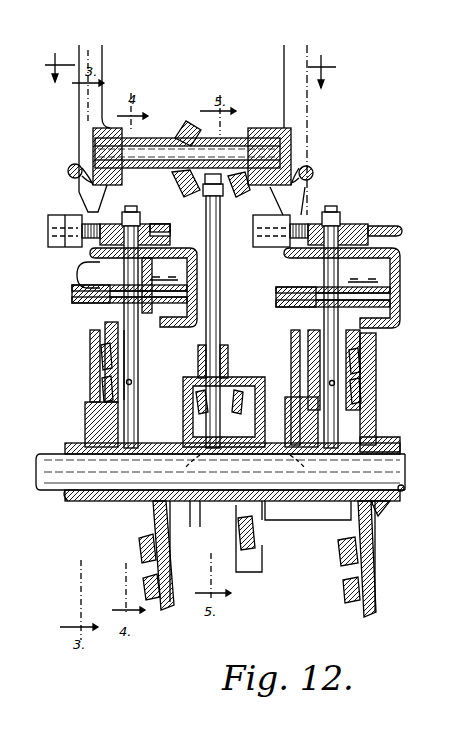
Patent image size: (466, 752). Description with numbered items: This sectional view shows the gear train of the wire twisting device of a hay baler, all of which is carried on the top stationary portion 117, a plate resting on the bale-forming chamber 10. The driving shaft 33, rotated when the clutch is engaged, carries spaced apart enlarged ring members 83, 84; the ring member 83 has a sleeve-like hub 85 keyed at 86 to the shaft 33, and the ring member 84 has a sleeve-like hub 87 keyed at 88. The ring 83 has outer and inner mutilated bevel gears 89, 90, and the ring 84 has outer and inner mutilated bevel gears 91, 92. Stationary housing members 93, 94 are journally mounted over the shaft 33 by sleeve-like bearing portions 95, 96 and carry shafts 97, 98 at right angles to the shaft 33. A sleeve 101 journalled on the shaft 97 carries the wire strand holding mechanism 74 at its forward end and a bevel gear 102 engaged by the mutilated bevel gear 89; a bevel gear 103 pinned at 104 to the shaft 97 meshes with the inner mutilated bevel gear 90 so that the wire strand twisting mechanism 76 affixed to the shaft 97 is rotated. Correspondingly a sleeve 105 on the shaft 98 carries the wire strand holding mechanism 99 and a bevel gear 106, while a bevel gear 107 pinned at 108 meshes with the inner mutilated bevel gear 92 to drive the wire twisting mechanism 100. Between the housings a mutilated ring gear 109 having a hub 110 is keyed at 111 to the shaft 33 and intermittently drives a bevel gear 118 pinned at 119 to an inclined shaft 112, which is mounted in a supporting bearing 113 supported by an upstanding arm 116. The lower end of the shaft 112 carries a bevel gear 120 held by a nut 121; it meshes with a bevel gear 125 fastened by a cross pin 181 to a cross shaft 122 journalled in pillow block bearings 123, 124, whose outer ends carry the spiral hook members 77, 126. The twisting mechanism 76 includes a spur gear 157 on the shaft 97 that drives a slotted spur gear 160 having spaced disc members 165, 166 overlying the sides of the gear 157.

The bale-forming chamber 10 is at (188, 69).
The shaft 33 is at (405, 488).
The wire strand holding mechanism 74 is at (72, 300).
The wire strand twisting mechanism 76 is at (60, 250).
The spiral hook member 77 is at (67, 166).
The ring member 83 is at (172, 568).
The ring member 84 is at (378, 571).
The sleeve-like hub 85 is at (193, 501).
The key 86 is at (200, 463).
The sleeve-like hub 87 is at (386, 506).
The key 88 is at (398, 453).
The outer mutilated bevel gear 89 is at (145, 588).
The inner mutilated bevel gear 90 is at (140, 548).
The outer mutilated bevel gear 91 is at (345, 592).
The inner mutilated bevel gear 92 is at (340, 554).
The housing member 93 is at (98, 431).
The housing member 94 is at (298, 430).
The sleeve-like bearing portion 95 is at (75, 502).
The sleeve-like bearing portion 96 is at (305, 502).
The shaft 97 is at (126, 331).
The shaft 98 is at (333, 422).
The wire strand holding mechanism 99 is at (380, 313).
The wire twisting mechanism 100 is at (357, 223).
The sleeve 101 is at (104, 323).
The bevel gear 102 is at (104, 363).
The bevel gear 103 is at (104, 396).
The pin 104 is at (126, 382).
The sleeve 105 is at (376, 343).
The bevel gear 106 is at (300, 352).
The bevel gear 107 is at (362, 395).
The pin 108 is at (335, 383).
The mutilated ring gear 109 is at (263, 535).
The hub 110 is at (247, 538).
The key 111 is at (237, 414).
The shaft 112 is at (190, 297).
The supporting bearing 113 is at (236, 344).
The upstanding arm 116 is at (197, 268).
The top stationary portion 117 is at (205, 233).
The bevel gear 118 is at (200, 414).
The pin 119 is at (200, 378).
The bevel gear 120 is at (240, 195).
The nut 121 is at (206, 205).
The cross shaft 122 is at (233, 148).
The bearing 123 is at (95, 130).
The bearing 124 is at (266, 127).
The bevel gear 125 is at (188, 120).
The spiral hook member 126 is at (303, 164).
The spur gear 157 is at (163, 224).
The slotted spur gear 160 is at (48, 239).
The disc member 165 is at (82, 206).
The disc member 166 is at (80, 272).
The cross pin 181 is at (172, 176).